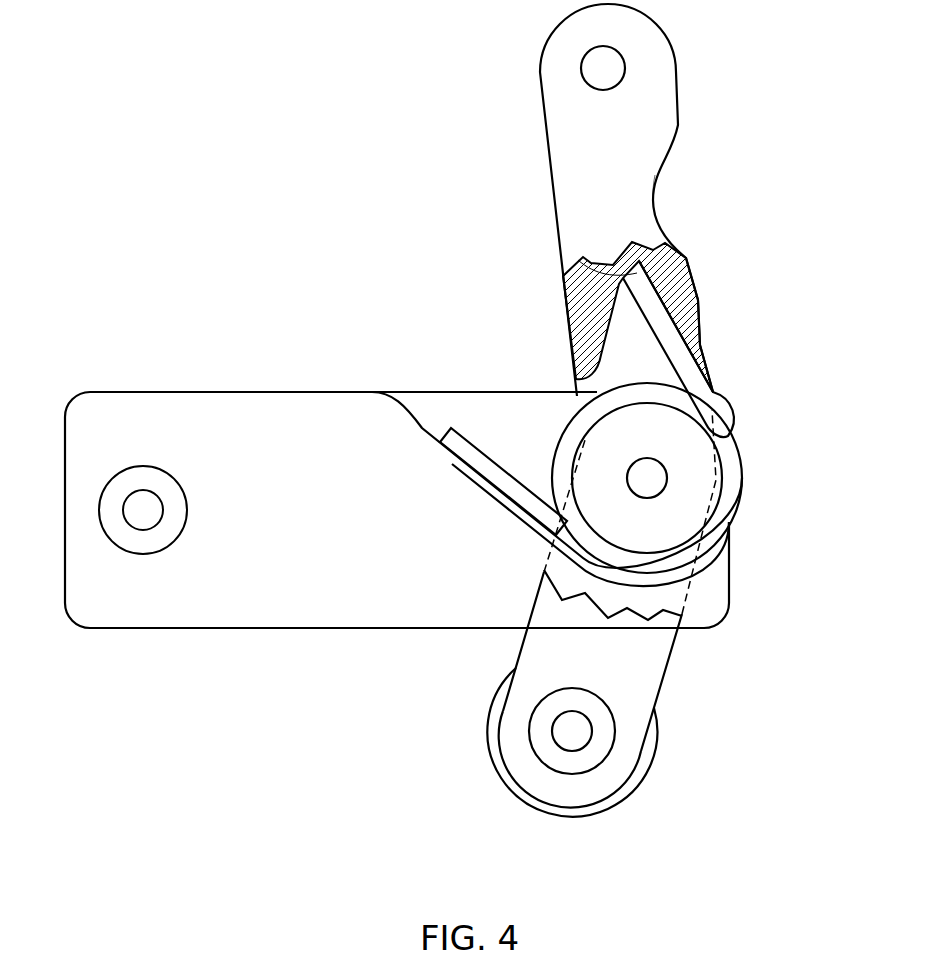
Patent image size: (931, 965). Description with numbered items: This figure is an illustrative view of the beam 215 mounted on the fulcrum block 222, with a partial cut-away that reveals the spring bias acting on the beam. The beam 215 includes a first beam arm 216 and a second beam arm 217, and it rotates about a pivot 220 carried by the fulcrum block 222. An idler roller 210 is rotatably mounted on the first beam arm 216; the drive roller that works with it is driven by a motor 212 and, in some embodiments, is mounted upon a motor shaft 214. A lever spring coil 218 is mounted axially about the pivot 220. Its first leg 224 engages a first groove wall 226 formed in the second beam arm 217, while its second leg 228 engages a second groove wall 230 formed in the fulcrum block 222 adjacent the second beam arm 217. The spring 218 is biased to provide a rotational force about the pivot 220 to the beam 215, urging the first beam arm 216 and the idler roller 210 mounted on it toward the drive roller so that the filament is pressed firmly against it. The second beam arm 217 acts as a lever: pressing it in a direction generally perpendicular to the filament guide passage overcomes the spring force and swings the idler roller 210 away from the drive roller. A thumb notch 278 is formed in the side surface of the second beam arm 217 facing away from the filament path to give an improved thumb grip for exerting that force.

The idler roller 210 is at (646, 777).
The motor 212 is at (560, 730).
The motor shaft 214 is at (588, 782).
The beam 215 is at (550, 255).
The first beam arm 216 is at (668, 668).
The second beam arm 217 is at (663, 108).
The lever spring coil 218 is at (733, 478).
The pivot 220 is at (655, 490).
The fulcrum block 222 is at (278, 394).
The first leg 224 is at (690, 381).
The first groove wall 226 is at (578, 260).
The second leg 228 is at (487, 476).
The second groove wall 230 is at (402, 418).
The thumb notch 278 is at (657, 200).